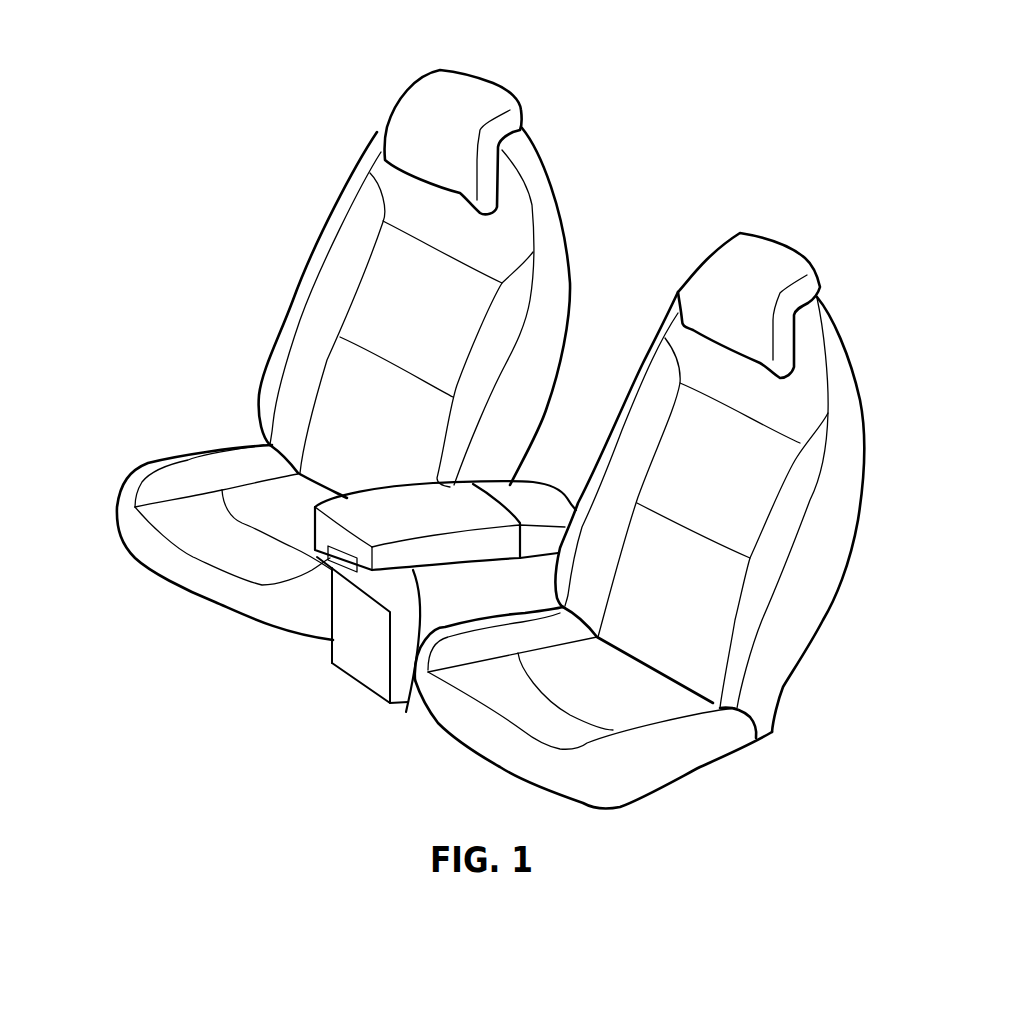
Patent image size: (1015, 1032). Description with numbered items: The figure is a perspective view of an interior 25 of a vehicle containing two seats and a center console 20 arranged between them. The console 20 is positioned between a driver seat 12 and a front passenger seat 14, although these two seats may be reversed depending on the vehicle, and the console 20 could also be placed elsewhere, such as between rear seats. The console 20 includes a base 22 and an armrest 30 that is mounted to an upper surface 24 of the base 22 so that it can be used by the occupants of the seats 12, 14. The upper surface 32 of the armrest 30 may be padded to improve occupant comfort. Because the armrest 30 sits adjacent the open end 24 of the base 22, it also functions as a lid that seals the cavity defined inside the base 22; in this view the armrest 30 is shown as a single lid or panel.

The driver seat 12 is at (863, 448).
The front passenger seat 14 is at (312, 260).
The console 20 is at (349, 691).
The base 22 is at (353, 615).
The upper surface of the base 24 is at (406, 712).
The interior of the vehicle 25 is at (648, 162).
The armrest 30 is at (314, 527).
The upper surface of the armrest 32 is at (470, 507).